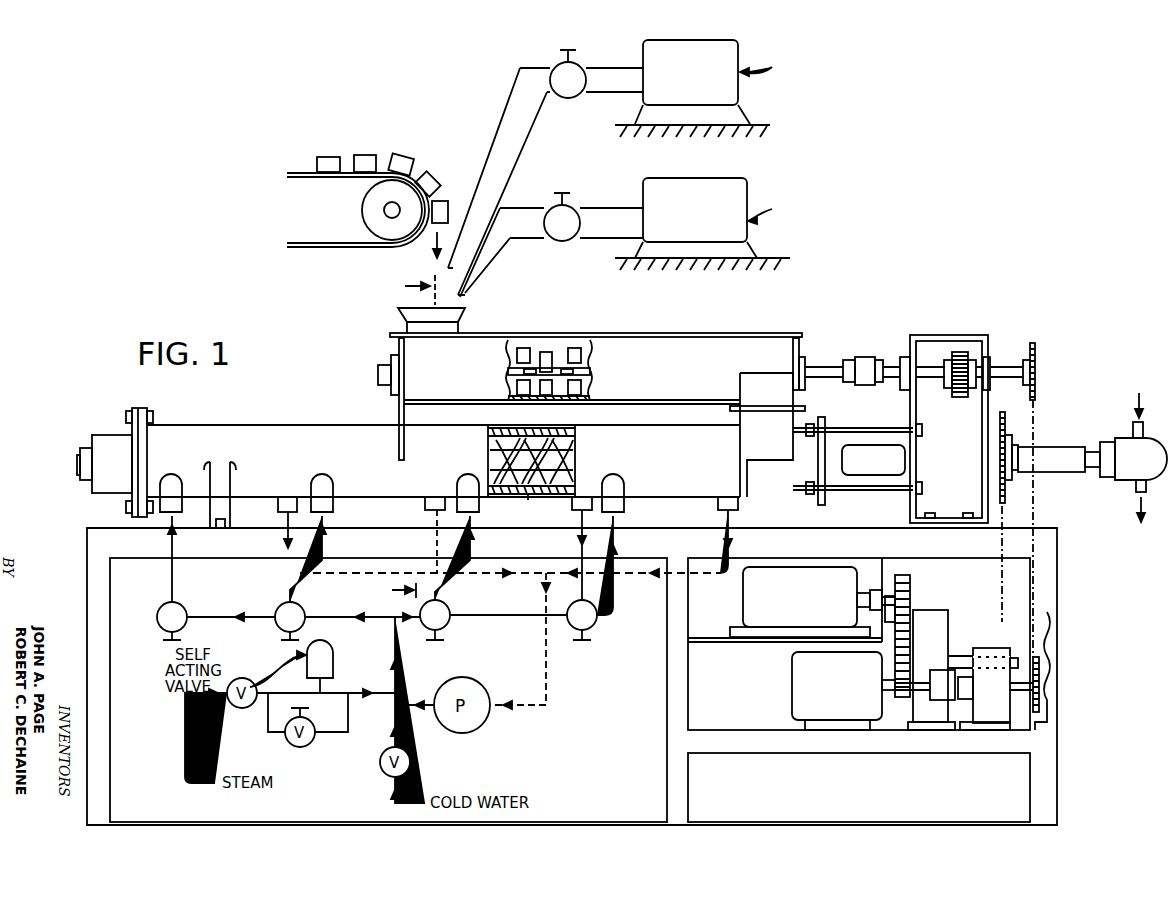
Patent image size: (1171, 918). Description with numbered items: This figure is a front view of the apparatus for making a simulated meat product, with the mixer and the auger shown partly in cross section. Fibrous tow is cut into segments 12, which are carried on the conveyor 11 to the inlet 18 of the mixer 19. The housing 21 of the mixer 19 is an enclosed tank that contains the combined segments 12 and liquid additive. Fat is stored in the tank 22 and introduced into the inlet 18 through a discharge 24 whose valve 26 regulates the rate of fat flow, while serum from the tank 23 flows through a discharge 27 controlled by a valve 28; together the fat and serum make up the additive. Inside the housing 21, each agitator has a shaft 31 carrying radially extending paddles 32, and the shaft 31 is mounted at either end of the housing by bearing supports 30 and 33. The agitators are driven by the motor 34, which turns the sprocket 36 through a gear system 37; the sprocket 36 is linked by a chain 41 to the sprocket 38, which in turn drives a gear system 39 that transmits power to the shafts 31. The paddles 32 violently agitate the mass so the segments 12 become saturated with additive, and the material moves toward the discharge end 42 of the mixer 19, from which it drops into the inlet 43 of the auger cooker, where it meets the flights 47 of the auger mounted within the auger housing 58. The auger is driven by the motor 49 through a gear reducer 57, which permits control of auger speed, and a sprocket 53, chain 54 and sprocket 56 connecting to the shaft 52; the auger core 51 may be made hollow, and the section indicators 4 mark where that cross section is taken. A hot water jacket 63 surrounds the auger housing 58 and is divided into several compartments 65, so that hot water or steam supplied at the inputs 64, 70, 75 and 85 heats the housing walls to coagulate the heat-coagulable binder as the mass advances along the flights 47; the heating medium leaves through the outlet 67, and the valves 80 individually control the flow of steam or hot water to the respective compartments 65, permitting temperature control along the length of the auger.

The section line 4 is at (405, 437).
The conveyor belt 11 is at (370, 252).
The segments 12 is at (363, 160).
The inlet 18 is at (398, 306).
The mixer 19 is at (733, 330).
The housing 21 is at (671, 352).
The tank 22 is at (742, 98).
The tank 23 is at (748, 202).
The discharge 24 is at (512, 110).
The valve 26 is at (583, 64).
The discharge 27 is at (603, 217).
The valve 28 is at (552, 207).
The bearing support 30 is at (391, 358).
The shaft 31 is at (521, 348).
The paddles 32 is at (545, 351).
The bearing support 33 is at (805, 365).
The motor 34 is at (808, 697).
The sprocket 36 is at (1040, 658).
The gear system 37 is at (1000, 714).
The sprocket 38 is at (1030, 347).
The gear system 39 is at (960, 352).
The chain 41 is at (1034, 447).
The discharge end 42 is at (780, 397).
The inlet 43 is at (755, 440).
The flights 47 is at (542, 448).
The motor 49 is at (760, 600).
The core 51 is at (535, 488).
The shaft 52 is at (1066, 455).
The sprocket 53 is at (1005, 494).
The chain 54 is at (1002, 597).
The sprocket 56 is at (1005, 647).
The gear reducer 57 is at (933, 620).
The auger housing 58 is at (500, 432).
The hot water jacket 63 is at (537, 434).
The inlet 64 is at (325, 502).
The compartments 65 is at (530, 436).
The outlet 67 is at (282, 504).
The input 70 is at (173, 502).
The input 75 is at (470, 502).
The valves 80 is at (182, 607).
The input 85 is at (615, 502).